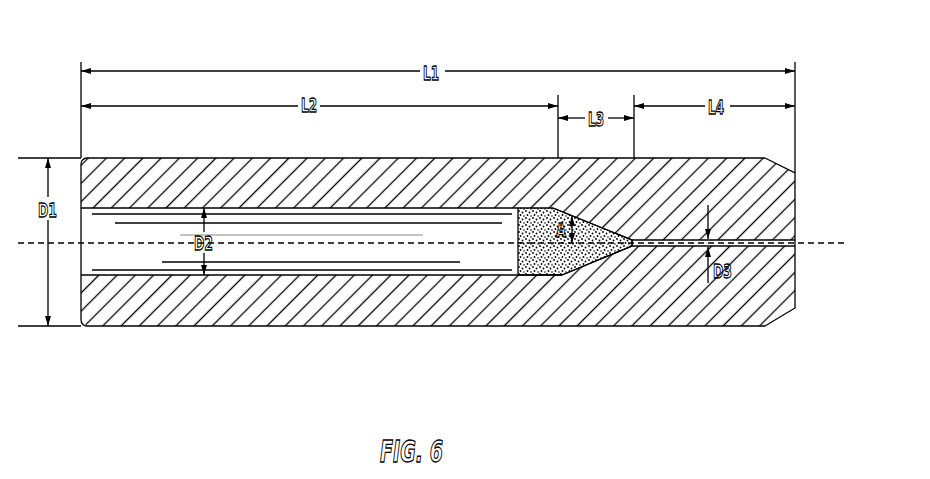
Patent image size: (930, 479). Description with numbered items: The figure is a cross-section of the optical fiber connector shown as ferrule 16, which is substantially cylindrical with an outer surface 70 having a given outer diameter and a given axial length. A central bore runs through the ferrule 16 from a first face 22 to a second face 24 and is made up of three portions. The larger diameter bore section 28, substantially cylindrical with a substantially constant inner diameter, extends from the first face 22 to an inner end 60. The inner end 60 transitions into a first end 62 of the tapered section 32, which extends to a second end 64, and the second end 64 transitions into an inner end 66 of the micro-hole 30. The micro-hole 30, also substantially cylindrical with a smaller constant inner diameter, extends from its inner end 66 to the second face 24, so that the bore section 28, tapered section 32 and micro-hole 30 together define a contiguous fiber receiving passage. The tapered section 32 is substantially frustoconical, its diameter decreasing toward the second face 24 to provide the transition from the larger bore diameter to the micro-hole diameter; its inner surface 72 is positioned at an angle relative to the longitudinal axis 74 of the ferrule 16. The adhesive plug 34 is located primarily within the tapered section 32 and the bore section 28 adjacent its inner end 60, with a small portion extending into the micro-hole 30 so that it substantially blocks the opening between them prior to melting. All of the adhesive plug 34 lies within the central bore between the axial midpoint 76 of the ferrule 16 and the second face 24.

The ferrule 16 is at (575, 50).
The first face 22 is at (76, 298).
The second face 24 is at (800, 210).
The bore section 28 is at (262, 262).
The micro-hole 30 is at (772, 248).
The tapered section 32 is at (620, 248).
The adhesive plug 34 is at (552, 278).
The inner end 60 is at (555, 258).
The first end 62 is at (579, 276).
The second end 64 is at (628, 248).
The inner end 66 is at (634, 250).
The outer surface 70 is at (257, 155).
The inner surface 72 is at (584, 216).
The longitudinal axis 74 is at (810, 247).
The axial midpoint 76 is at (441, 155).